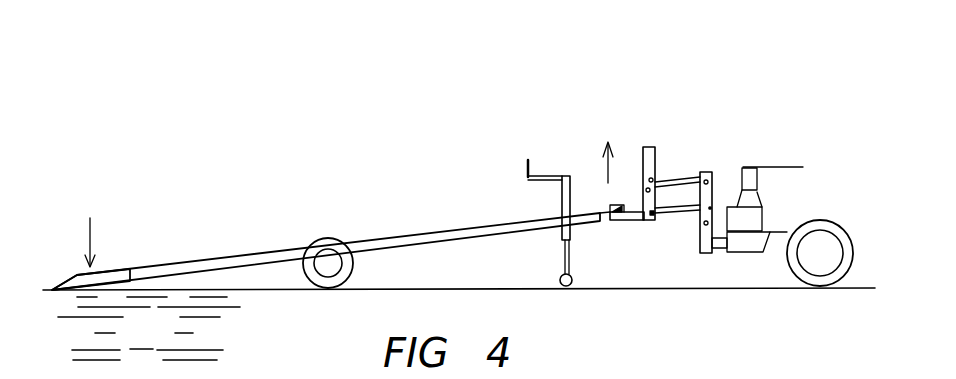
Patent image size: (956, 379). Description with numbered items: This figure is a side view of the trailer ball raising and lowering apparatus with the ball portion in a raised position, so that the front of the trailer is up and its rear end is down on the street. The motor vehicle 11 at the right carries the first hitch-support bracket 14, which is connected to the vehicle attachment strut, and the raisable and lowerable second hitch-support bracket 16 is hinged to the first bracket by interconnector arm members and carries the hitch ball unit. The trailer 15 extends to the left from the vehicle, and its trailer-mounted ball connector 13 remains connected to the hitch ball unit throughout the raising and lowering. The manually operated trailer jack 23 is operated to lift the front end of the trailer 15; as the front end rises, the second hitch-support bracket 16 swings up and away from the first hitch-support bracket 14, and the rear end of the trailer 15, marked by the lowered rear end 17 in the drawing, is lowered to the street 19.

The motor vehicle 11 is at (792, 180).
The trailer-mounted ball connector 13 is at (620, 208).
The first hitch-support bracket 14 is at (700, 172).
The trailer 15 is at (423, 237).
The raisable and lowerable second hitch-support bracket 16 is at (648, 147).
The ramp tip / lip 17 is at (120, 273).
The street 19 is at (149, 328).
The manually operated trailer jack 23 is at (560, 198).